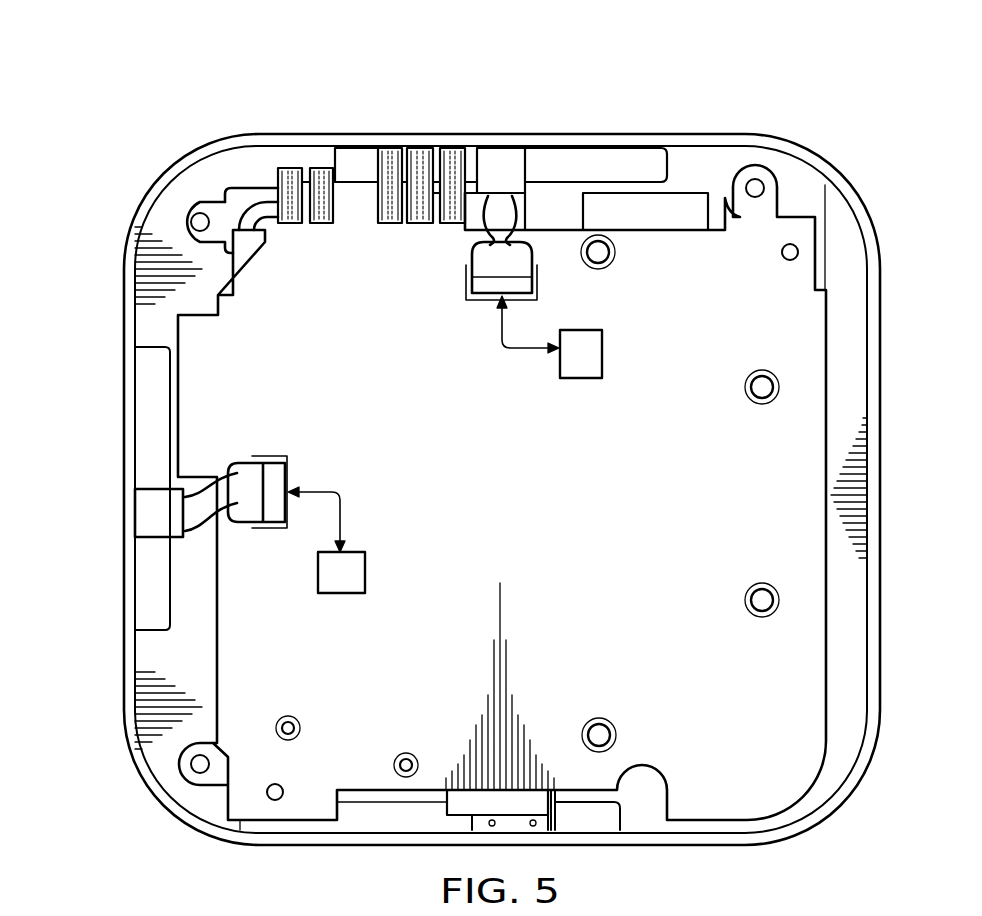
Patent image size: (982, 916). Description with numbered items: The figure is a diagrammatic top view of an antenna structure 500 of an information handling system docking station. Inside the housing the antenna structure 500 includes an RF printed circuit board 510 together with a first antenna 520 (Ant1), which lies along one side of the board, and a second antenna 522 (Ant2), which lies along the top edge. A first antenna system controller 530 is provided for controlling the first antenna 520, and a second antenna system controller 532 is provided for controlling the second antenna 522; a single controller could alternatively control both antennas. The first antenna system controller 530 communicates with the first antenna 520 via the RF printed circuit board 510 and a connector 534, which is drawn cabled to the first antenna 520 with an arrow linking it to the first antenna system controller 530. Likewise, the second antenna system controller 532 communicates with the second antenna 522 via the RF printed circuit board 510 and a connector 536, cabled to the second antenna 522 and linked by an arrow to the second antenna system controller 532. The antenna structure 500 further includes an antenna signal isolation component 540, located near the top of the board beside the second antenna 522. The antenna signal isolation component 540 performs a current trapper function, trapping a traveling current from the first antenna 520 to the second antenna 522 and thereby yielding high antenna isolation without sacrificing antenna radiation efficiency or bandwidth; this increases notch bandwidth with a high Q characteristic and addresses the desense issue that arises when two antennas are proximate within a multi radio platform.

The antenna structure 500 is at (372, 91).
The RF printed circuit board 510 is at (677, 613).
The first antenna 520 is at (143, 418).
The second antenna 522 is at (602, 156).
The first antenna system controller 530 is at (366, 574).
The second antenna system controller 532 is at (578, 380).
The connector 534 is at (288, 473).
The connector 536 is at (533, 284).
The antenna signal isolation component 540 is at (419, 241).